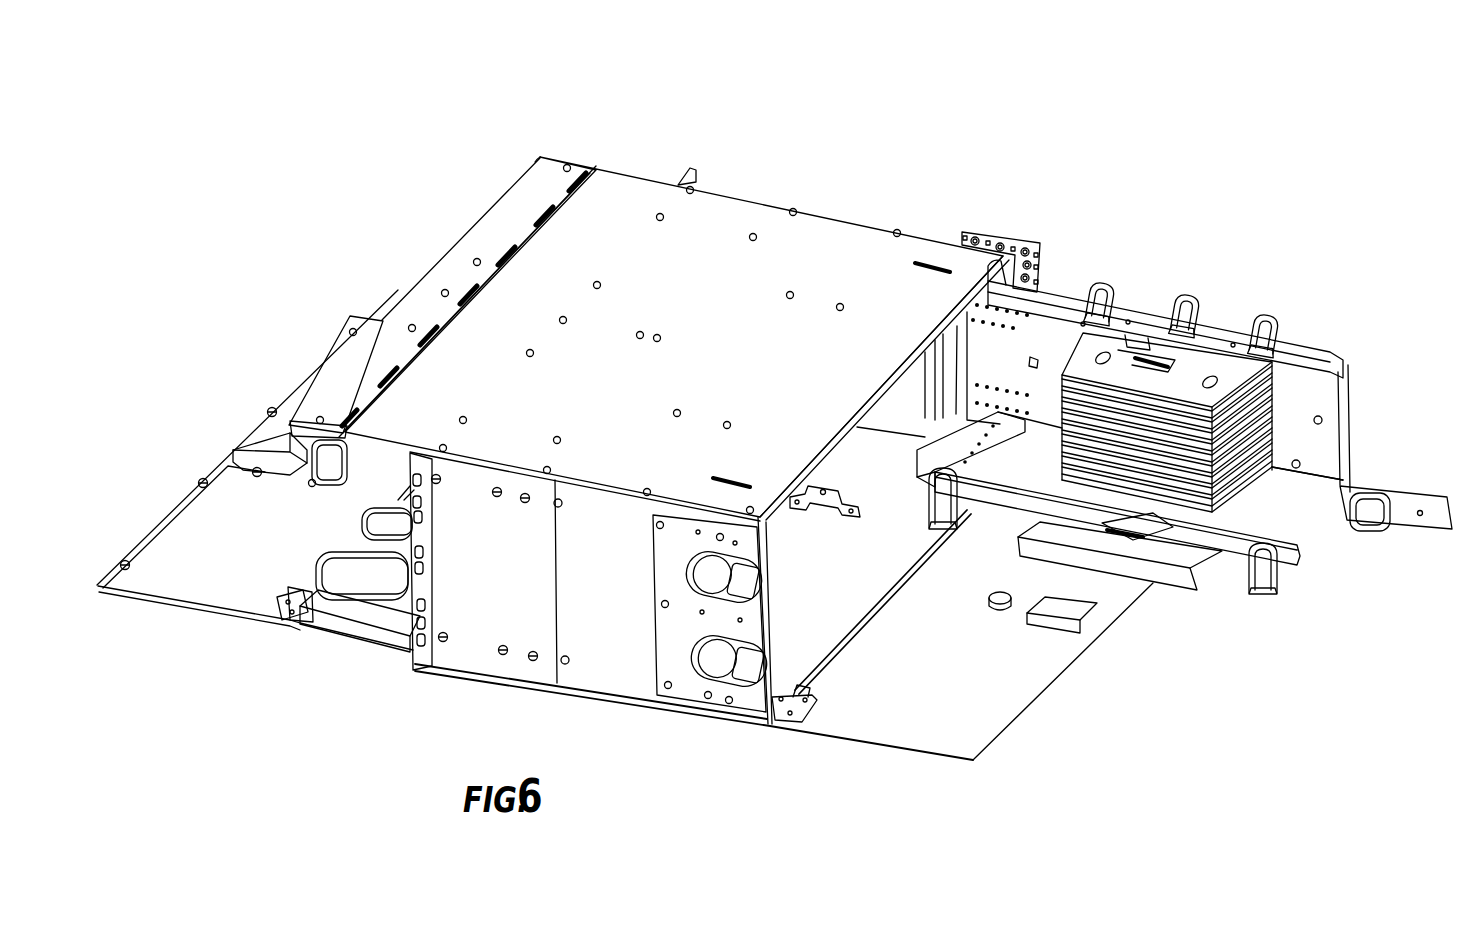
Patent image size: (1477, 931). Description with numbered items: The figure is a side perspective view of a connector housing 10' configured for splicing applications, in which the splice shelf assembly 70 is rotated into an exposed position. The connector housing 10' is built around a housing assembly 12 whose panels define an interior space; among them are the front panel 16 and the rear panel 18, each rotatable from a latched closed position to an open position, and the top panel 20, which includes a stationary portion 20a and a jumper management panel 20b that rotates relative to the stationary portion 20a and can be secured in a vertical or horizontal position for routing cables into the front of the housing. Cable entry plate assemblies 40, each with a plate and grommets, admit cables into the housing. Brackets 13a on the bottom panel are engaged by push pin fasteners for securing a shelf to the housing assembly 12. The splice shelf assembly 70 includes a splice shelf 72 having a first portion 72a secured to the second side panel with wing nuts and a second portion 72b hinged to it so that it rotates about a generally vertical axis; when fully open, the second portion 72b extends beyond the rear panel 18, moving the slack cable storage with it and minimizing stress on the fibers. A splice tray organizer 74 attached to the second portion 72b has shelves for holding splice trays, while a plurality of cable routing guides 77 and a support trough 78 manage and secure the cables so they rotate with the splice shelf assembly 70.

The connector housing 10' is at (586, 422).
The housing assembly 12 is at (674, 318).
The bracket 13a is at (800, 651).
The front panel 16 is at (255, 494).
The rear panel 18 is at (1025, 711).
The top panel 20 is at (512, 244).
The stationary portion 20a is at (512, 277).
The jumper management panel 20b is at (509, 199).
The cable entry plate assembly 40 is at (681, 645).
The splice shelf assembly 70 is at (1177, 298).
The splice shelf 72 is at (1366, 424).
The first portion 72a is at (980, 301).
The second portion 72b is at (1377, 555).
The splice tray organizer 74 is at (1150, 529).
The cable routing guides 77 is at (1182, 270).
The support trough 78 is at (1138, 609).